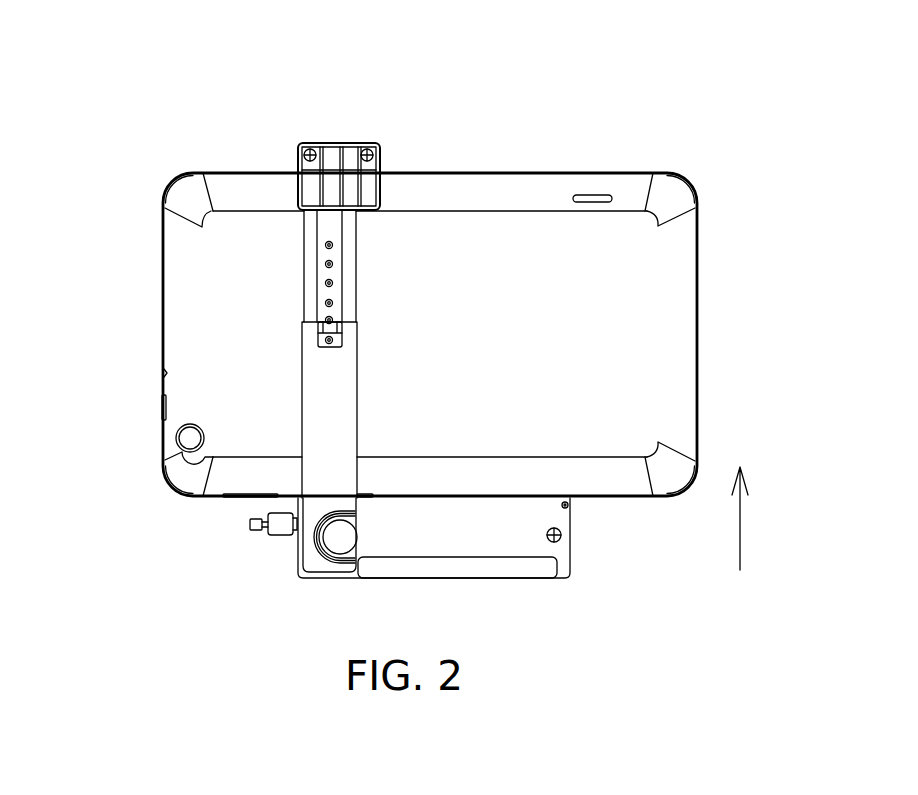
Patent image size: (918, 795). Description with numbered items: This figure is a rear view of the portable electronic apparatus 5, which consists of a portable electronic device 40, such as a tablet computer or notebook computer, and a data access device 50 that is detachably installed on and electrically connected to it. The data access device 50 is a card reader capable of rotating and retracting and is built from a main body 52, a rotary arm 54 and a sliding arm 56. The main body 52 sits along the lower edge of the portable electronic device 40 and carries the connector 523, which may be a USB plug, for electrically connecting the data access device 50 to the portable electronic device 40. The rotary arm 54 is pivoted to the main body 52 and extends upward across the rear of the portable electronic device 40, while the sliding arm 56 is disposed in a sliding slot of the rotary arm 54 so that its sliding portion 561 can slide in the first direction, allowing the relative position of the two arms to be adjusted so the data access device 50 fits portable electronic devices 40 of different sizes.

The portable electronic apparatus 5 is at (700, 87).
The portable electronic device 40 is at (622, 272).
The data access device 50 is at (95, 193).
The main body 52 is at (405, 523).
The connector 523 is at (257, 529).
The rotary arm 54 is at (317, 377).
The sliding arm 56 is at (321, 258).
The sliding portion 561 is at (350, 152).